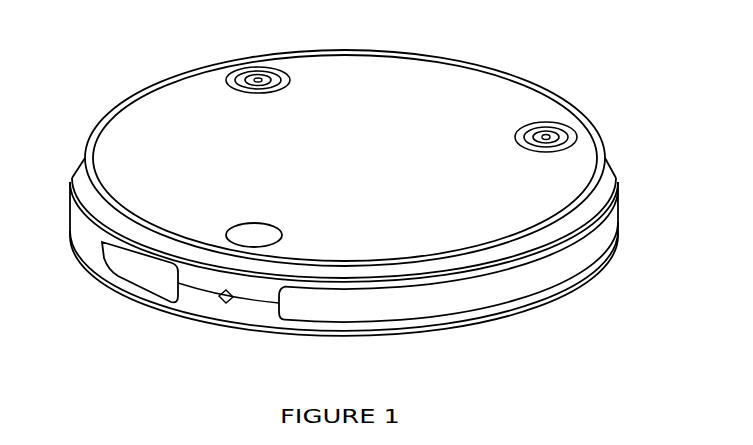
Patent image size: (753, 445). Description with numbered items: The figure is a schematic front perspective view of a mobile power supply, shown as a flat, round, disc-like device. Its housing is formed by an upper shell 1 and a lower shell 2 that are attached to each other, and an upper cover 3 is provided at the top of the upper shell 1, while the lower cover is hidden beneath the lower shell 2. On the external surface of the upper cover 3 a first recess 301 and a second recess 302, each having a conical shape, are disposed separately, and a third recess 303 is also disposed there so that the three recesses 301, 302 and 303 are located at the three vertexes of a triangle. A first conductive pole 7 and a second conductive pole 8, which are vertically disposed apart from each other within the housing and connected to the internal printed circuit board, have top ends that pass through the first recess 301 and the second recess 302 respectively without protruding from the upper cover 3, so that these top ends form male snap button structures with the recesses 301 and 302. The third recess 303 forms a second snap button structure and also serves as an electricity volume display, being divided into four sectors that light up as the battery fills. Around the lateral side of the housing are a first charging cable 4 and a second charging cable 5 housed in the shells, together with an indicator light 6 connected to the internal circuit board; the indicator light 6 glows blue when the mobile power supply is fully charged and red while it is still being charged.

The upper shell 1 is at (200, 280).
The lower shell 2 is at (267, 318).
The upper cover 3 is at (493, 92).
The first charging cable 4 is at (540, 277).
The second charging cable 5 is at (132, 265).
The indicator light 6 is at (222, 303).
The first conductive pole 7 is at (257, 94).
The second conductive pole 8 is at (545, 144).
The first recess 301 is at (278, 68).
The second recess 302 is at (577, 131).
The third recess 303 is at (273, 233).